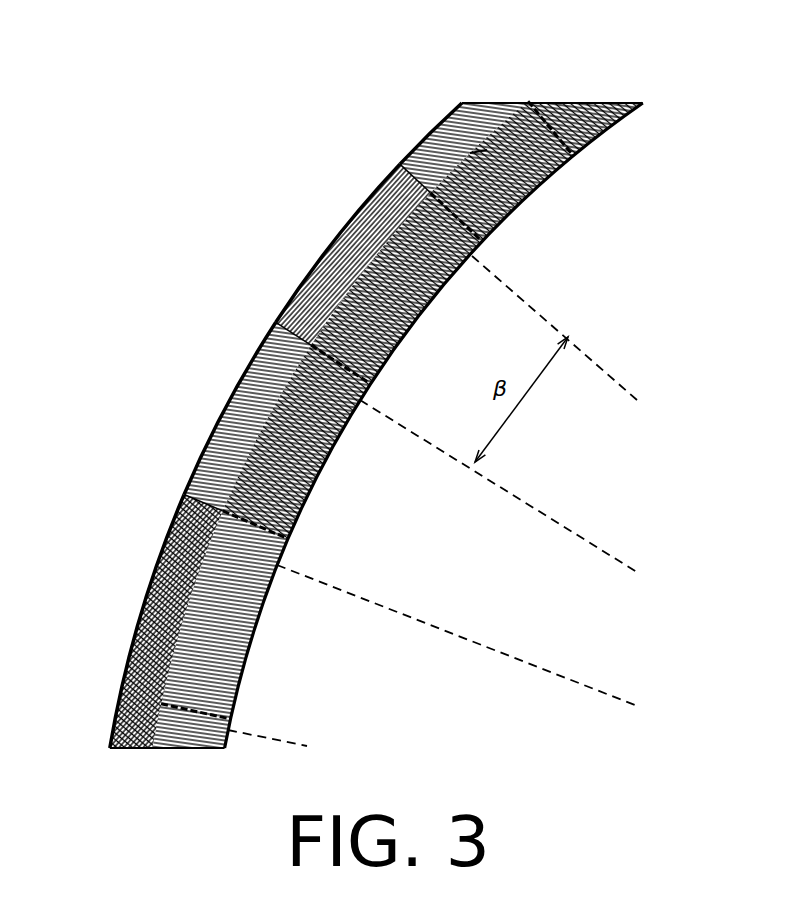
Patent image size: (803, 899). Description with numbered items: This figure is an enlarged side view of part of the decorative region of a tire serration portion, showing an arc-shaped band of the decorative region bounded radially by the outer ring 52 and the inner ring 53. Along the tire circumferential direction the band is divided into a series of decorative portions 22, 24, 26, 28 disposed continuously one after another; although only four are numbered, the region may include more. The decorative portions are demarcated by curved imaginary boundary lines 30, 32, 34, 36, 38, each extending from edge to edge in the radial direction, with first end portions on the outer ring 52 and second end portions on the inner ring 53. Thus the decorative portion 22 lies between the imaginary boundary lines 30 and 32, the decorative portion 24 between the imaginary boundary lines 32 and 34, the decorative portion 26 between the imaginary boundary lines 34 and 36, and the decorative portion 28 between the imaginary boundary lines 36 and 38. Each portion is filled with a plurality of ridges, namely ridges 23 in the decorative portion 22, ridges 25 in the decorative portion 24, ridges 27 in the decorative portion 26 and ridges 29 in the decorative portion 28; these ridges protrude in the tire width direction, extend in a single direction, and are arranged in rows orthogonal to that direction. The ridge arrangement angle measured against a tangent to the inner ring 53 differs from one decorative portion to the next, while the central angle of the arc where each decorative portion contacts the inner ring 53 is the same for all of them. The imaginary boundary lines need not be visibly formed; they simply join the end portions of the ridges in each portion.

The decorative portion 22 is at (140, 600).
The ridges 23 is at (167, 543).
The decorative portion 24 is at (213, 423).
The ridges 25 is at (238, 420).
The decorative portion 26 is at (323, 248).
The ridges 27 is at (345, 235).
The decorative portion 28 is at (440, 123).
The ridges 29 is at (470, 153).
The imaginary boundary line 30 is at (130, 697).
The imaginary boundary line 32 is at (190, 497).
The imaginary boundary line 34 is at (300, 347).
The imaginary boundary line 36 is at (407, 200).
The imaginary boundary line 38 is at (528, 100).
The outer ring 52 is at (308, 285).
The inner ring 53 is at (393, 353).